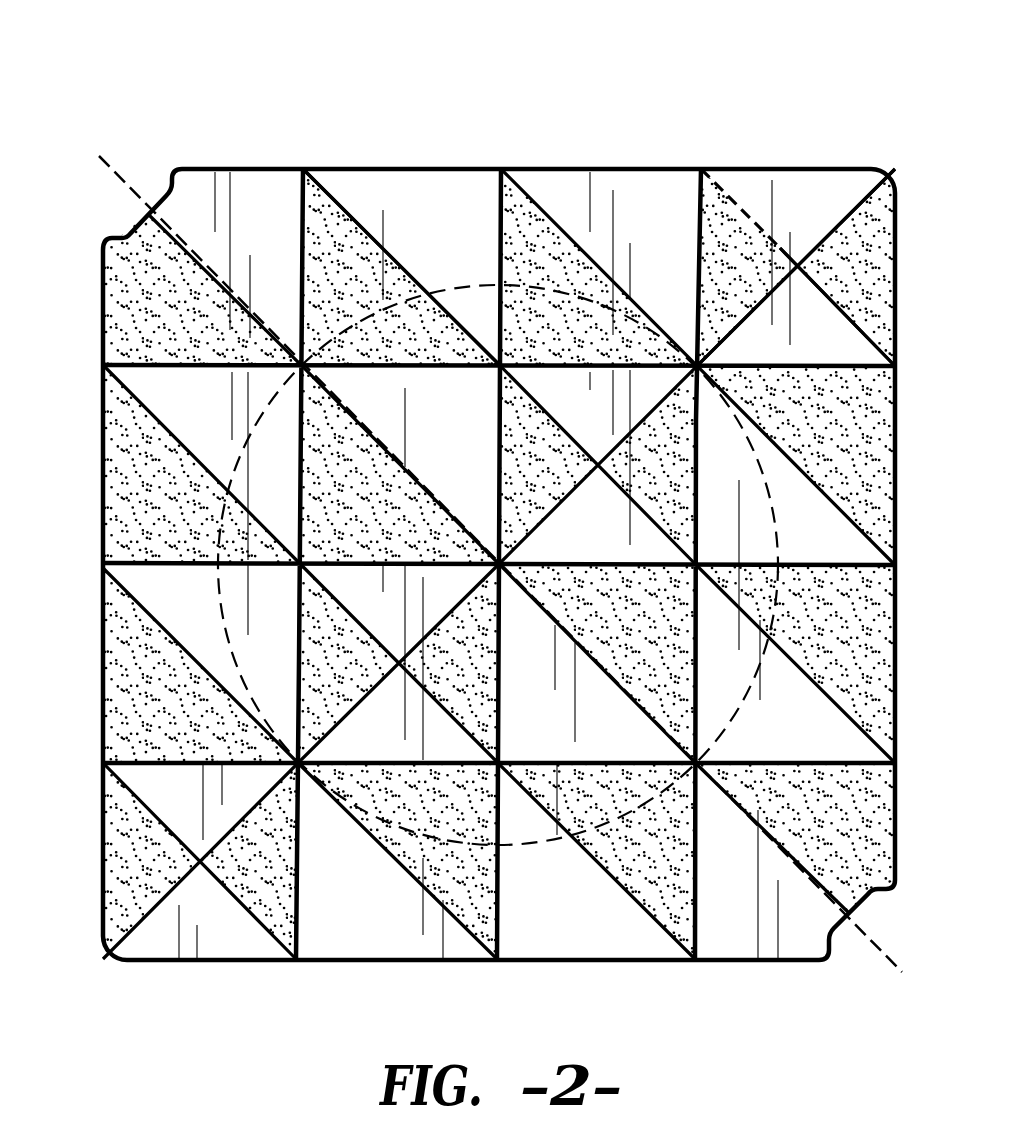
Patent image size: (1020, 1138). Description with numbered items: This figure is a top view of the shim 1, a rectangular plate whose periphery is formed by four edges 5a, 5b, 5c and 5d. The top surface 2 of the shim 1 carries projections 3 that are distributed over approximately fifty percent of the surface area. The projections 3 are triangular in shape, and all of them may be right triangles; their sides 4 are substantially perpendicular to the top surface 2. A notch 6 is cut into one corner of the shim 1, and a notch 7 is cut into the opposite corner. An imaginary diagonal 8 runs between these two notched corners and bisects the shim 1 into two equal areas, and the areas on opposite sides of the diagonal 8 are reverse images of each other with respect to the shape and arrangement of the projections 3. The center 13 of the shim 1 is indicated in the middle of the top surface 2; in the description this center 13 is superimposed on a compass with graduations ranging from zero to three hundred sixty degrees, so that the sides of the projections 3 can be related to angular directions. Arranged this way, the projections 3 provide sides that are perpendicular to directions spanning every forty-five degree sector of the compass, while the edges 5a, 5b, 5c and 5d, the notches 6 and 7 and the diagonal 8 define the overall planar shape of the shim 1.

The shim 1 is at (729, 92).
The top surface 2 is at (411, 197).
The projections 3 is at (520, 223).
The sides 4 is at (842, 222).
The edge 5a is at (572, 961).
The edge 5b is at (100, 665).
The edge 5c is at (272, 168).
The edge 5d is at (897, 419).
The notch 6 is at (170, 198).
The notch 7 is at (834, 932).
The imaginary diagonal 8 is at (117, 181).
The center 13 is at (768, 464).